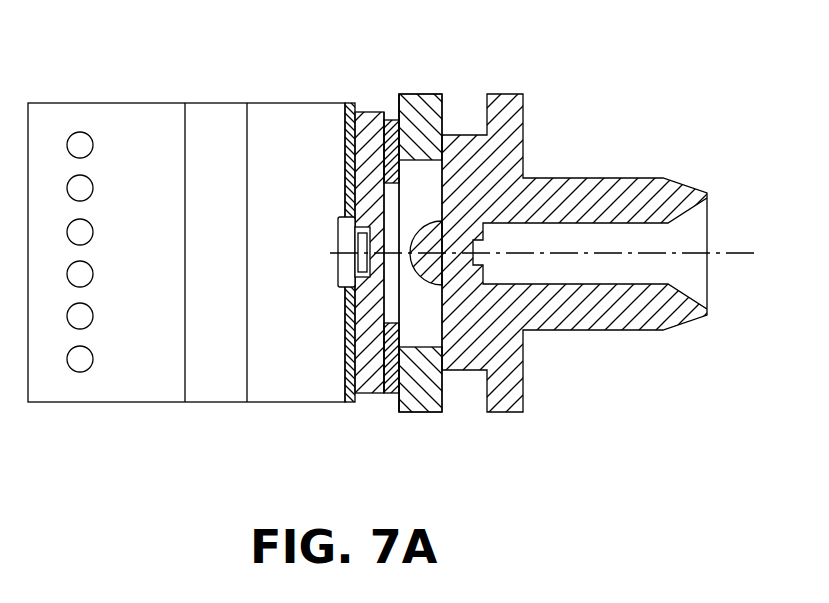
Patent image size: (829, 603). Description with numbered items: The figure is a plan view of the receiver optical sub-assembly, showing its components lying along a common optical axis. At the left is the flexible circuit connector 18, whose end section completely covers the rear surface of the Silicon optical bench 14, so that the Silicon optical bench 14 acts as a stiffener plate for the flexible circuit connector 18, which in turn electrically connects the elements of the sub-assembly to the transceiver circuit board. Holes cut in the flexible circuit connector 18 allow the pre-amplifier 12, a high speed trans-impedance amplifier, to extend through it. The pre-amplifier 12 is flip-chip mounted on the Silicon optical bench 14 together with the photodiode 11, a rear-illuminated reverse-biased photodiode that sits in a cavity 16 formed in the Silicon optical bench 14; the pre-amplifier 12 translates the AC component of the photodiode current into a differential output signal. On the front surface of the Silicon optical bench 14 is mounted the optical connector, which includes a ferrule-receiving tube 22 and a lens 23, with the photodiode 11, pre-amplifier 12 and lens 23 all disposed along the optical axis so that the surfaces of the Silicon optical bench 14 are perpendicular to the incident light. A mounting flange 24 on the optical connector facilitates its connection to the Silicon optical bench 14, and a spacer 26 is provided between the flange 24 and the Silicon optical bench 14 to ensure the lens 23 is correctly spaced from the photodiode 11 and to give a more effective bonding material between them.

The photodiode 11 is at (340, 276).
The pre-amplifier 12 is at (338, 232).
The Silicon optical bench 14 is at (367, 380).
The cavity 16 is at (352, 157).
The flexible circuit connector 18 is at (130, 377).
The ferrule-receiving tube 22 is at (603, 178).
The lens 23 is at (428, 268).
The mounting flange 24 is at (426, 103).
The spacer 26 is at (392, 120).